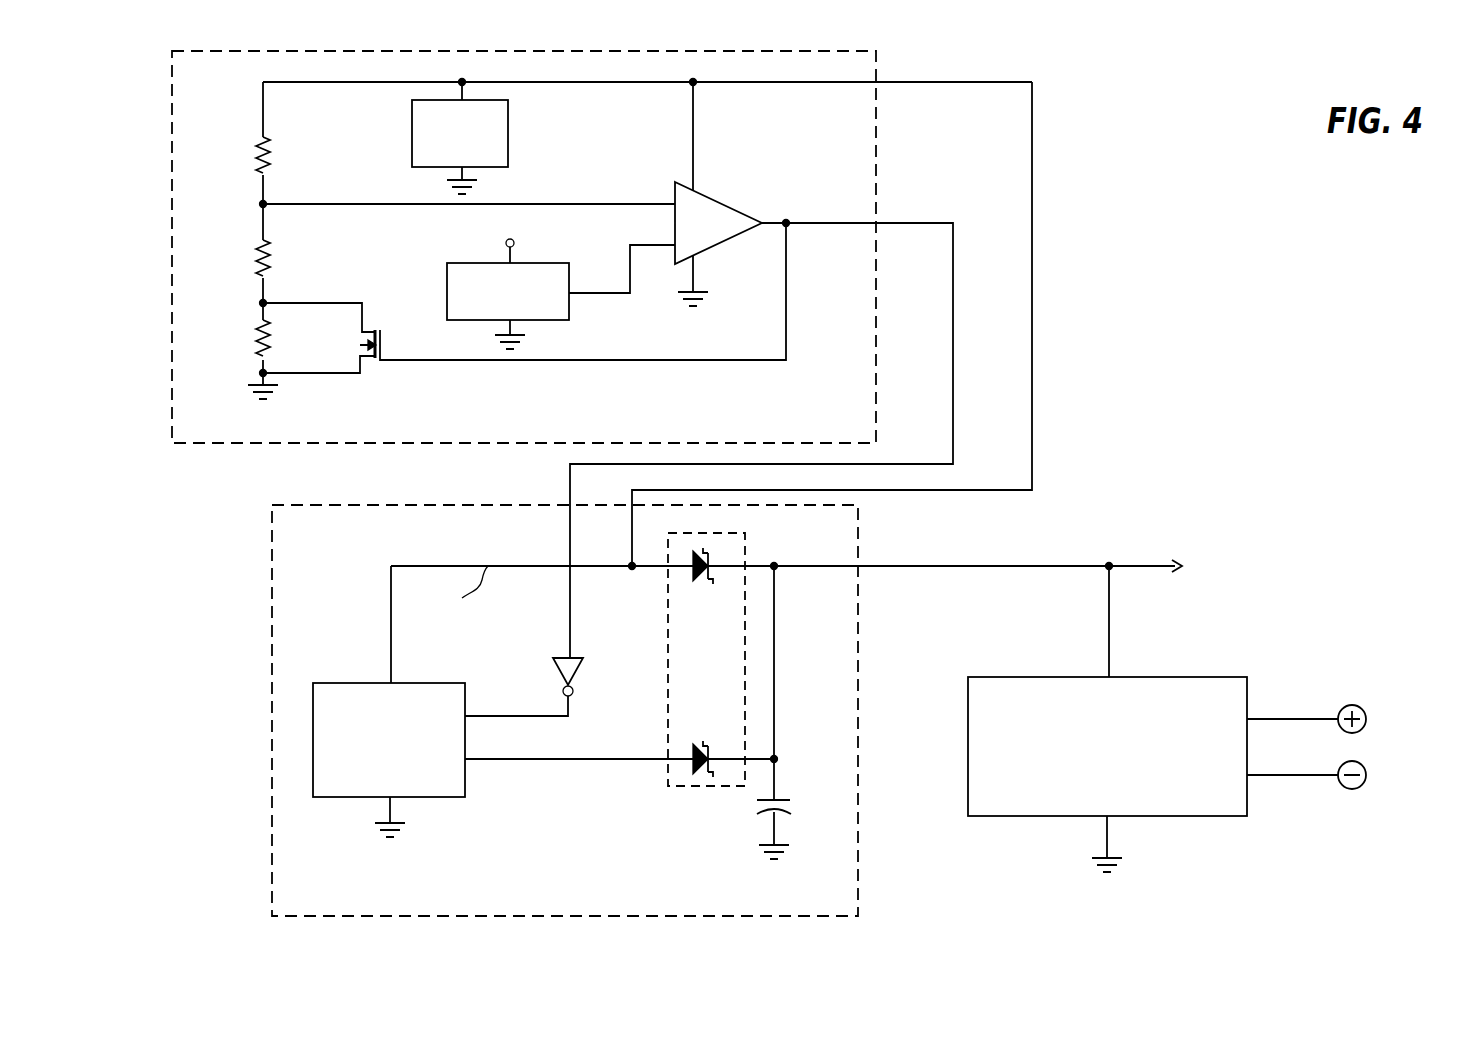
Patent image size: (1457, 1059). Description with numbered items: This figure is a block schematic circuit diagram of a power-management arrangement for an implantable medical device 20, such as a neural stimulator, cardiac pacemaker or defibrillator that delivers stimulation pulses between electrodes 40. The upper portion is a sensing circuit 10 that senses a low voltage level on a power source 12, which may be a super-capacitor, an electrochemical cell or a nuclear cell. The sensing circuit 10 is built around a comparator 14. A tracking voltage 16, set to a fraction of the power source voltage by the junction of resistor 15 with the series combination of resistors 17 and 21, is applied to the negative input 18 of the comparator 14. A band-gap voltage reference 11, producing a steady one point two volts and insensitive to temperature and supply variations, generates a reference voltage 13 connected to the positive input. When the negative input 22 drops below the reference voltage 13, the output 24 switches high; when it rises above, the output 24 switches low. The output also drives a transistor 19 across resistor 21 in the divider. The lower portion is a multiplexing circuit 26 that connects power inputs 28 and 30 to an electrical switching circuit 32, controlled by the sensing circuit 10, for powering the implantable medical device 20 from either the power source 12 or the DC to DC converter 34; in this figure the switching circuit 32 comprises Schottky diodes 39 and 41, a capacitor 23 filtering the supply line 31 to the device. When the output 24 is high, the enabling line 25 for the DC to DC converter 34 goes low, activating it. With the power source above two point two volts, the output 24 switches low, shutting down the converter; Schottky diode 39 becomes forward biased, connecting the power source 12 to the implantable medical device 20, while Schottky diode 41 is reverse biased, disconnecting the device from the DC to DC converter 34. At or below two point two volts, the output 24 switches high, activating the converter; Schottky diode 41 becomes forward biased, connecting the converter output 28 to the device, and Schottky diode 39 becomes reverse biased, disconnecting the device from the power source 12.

The sensing circuit 10 is at (172, 195).
The voltage reference 11 is at (447, 283).
The power source 12 is at (412, 145).
The reference voltage 13 is at (600, 294).
The comparator 14 is at (718, 194).
The resistor 15 is at (258, 146).
The tracking voltage 16 is at (346, 205).
The resistor 17 is at (258, 251).
The negative input 18 is at (650, 250).
The NMOS transistor 19 is at (373, 358).
The implantable medical device 20 is at (993, 817).
The resistor 21 is at (258, 334).
The negative input 22 is at (648, 204).
The capacitor 23 is at (786, 802).
The output 24 is at (845, 223).
The enabling line 25 is at (570, 706).
The multiplexing circuit 26 is at (272, 748).
The power input 28 is at (572, 762).
The power input 30 is at (810, 83).
The VDD supply line 31 is at (910, 566).
The switching circuit 32 is at (689, 688).
The DC to DC converter 34 is at (330, 797).
The Schottky diode 39 is at (706, 585).
The electrodes 40 is at (1366, 719).
The Schottky diode 41 is at (704, 740).